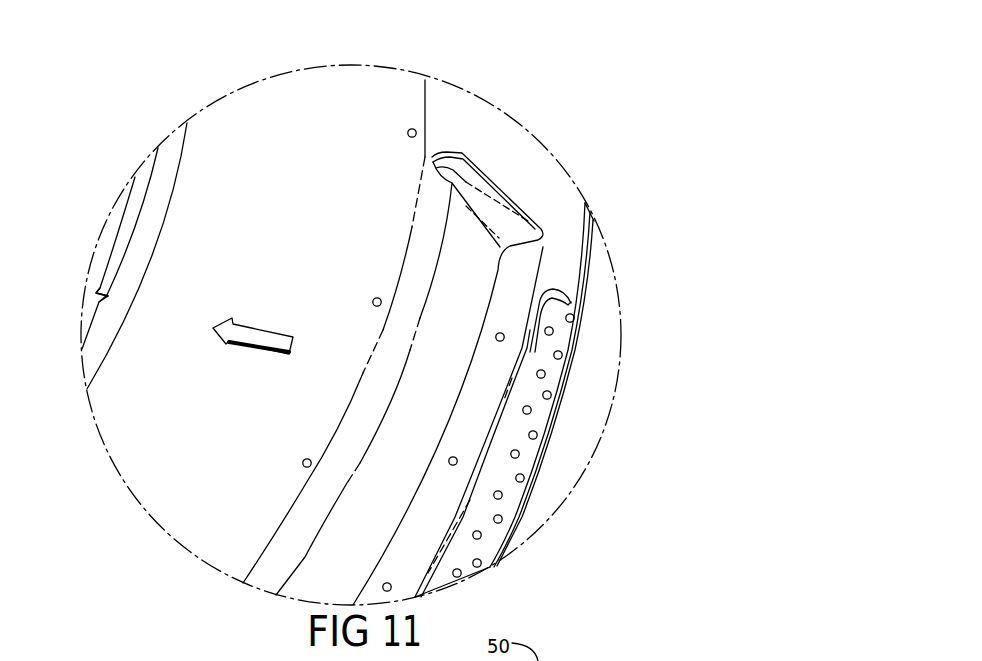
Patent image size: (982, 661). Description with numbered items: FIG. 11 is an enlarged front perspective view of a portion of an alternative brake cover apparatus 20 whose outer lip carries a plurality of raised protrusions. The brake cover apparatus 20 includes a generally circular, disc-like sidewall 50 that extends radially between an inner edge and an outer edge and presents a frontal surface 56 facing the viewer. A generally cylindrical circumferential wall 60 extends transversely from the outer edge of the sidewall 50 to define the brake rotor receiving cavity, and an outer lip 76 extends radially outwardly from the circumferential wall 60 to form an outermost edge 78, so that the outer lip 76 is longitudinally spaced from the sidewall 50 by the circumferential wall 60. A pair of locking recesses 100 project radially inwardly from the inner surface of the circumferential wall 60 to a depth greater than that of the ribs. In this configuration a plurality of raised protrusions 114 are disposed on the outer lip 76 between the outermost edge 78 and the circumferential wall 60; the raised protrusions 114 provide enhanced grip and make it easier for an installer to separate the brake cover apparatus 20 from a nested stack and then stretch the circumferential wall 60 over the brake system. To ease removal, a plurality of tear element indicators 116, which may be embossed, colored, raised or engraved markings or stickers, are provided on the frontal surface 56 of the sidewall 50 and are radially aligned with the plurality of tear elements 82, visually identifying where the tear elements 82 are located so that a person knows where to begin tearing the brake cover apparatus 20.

The brake cover apparatus 20 is at (512, 72).
The sidewall 50 is at (302, 94).
The frontal surface 56 is at (213, 143).
The circumferential wall 60 is at (523, 168).
The outer lip 76 is at (563, 338).
The outermost edge 78 is at (540, 464).
The tear elements 82 is at (72, 282).
The locking recesses 100 is at (478, 297).
The raised protrusions 114 is at (534, 431).
The tear element indicators 116 is at (225, 323).